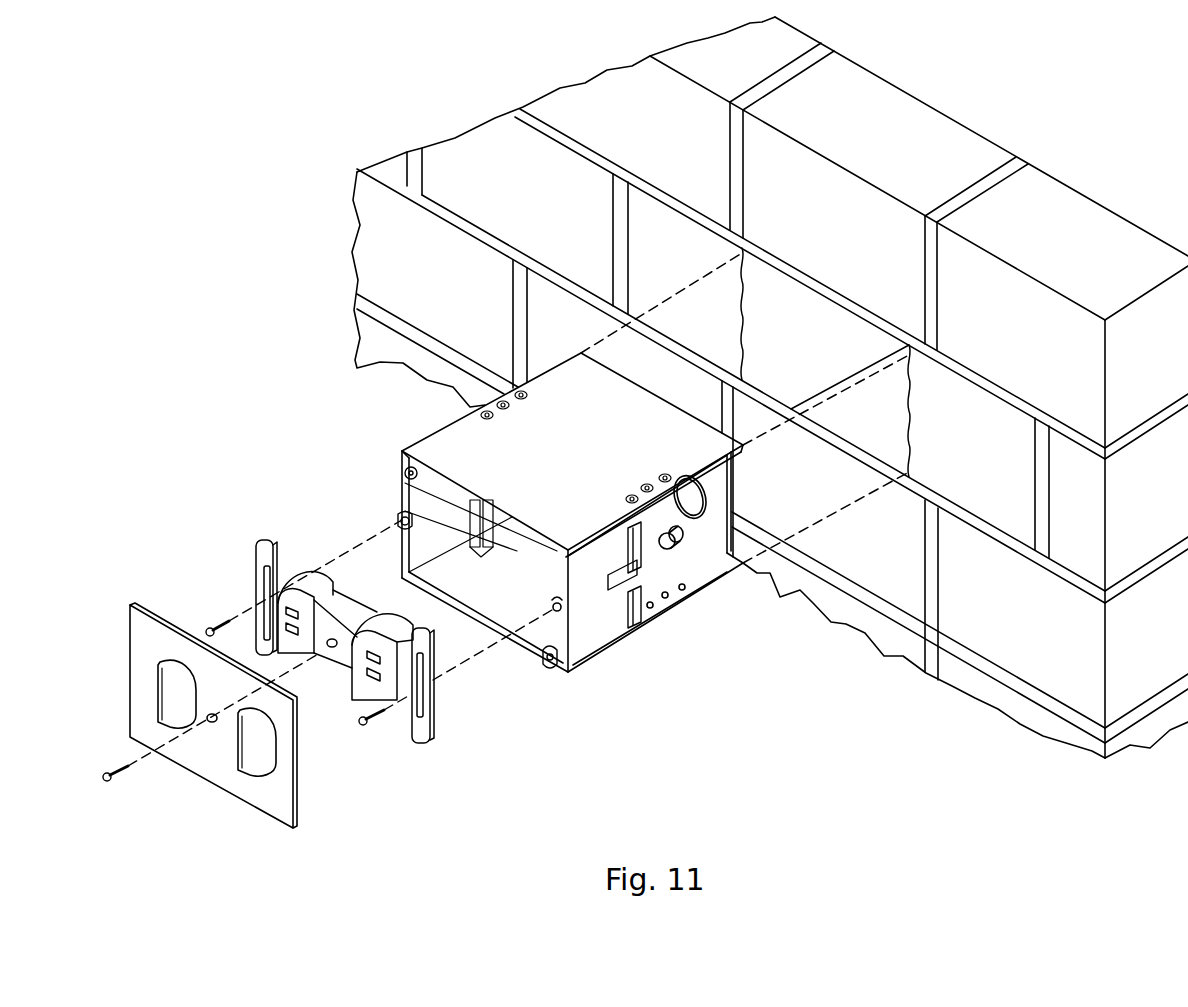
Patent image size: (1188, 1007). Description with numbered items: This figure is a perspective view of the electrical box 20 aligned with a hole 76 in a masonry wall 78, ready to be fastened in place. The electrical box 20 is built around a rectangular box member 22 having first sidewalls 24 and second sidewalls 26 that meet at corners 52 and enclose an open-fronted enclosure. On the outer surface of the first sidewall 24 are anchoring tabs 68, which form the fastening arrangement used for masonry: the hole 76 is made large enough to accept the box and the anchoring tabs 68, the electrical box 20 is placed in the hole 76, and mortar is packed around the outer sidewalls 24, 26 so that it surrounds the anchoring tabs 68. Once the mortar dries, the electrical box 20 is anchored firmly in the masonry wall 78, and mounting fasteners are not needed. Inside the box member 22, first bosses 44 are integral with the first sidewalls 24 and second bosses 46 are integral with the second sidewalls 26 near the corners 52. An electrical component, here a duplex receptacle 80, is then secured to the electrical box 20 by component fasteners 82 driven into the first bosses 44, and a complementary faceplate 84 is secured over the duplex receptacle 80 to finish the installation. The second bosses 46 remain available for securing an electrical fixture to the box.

The electrical box 20 is at (648, 712).
The box member 22 is at (523, 543).
The first sidewall 24 is at (647, 562).
The second sidewall 26 is at (572, 455).
The first boss 44 is at (400, 521).
The second boss 46 is at (406, 475).
The corner 52 is at (400, 450).
The anchoring tab 68 is at (632, 547).
The hole 76 is at (888, 405).
The masonry wall 78 is at (770, 387).
The duplex receptacle 80 is at (307, 570).
The component fastener 82 is at (218, 622).
The faceplate 84 is at (300, 760).